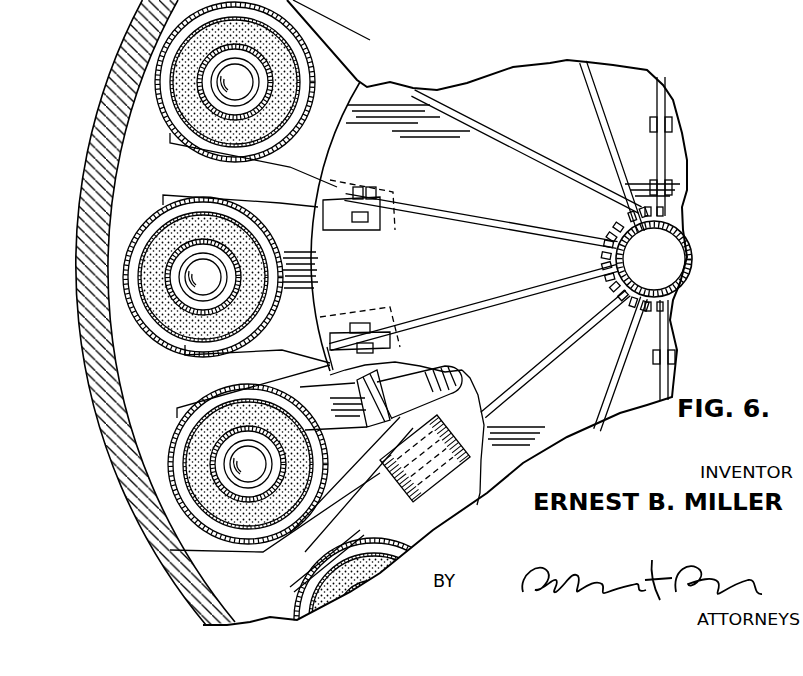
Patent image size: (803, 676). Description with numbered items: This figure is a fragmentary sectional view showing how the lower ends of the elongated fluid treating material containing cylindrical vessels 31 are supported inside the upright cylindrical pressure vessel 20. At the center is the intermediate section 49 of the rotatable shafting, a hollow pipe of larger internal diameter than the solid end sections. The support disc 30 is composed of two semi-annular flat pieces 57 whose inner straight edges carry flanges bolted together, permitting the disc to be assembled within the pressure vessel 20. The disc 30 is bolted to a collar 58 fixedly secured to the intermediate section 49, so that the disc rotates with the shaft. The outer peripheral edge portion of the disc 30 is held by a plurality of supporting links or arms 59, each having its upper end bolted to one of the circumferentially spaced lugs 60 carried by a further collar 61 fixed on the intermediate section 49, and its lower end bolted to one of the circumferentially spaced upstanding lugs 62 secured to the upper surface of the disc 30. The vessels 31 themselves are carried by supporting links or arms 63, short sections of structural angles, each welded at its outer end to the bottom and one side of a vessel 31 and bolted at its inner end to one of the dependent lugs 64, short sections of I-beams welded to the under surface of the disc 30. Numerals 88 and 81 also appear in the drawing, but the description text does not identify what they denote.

The pressure vessel 20 is at (92, 137).
The fluid treating material containing cylindrical vessels 31 is at (178, 32).
The support disc 30 is at (640, 50).
The semi-annular flat pieces 57 is at (576, 151).
The collar 58 is at (683, 223).
The intermediate section 49 is at (685, 249).
The collar 61 is at (678, 300).
The lugs 60 is at (592, 242).
The supporting links or arms 59 is at (485, 290).
The upstanding lugs 62 is at (383, 237).
The supporting links or arms 63 is at (287, 208).
The dependent lugs 64 is at (425, 490).
The element 88 is at (424, 8).
The element 81 is at (474, 8).